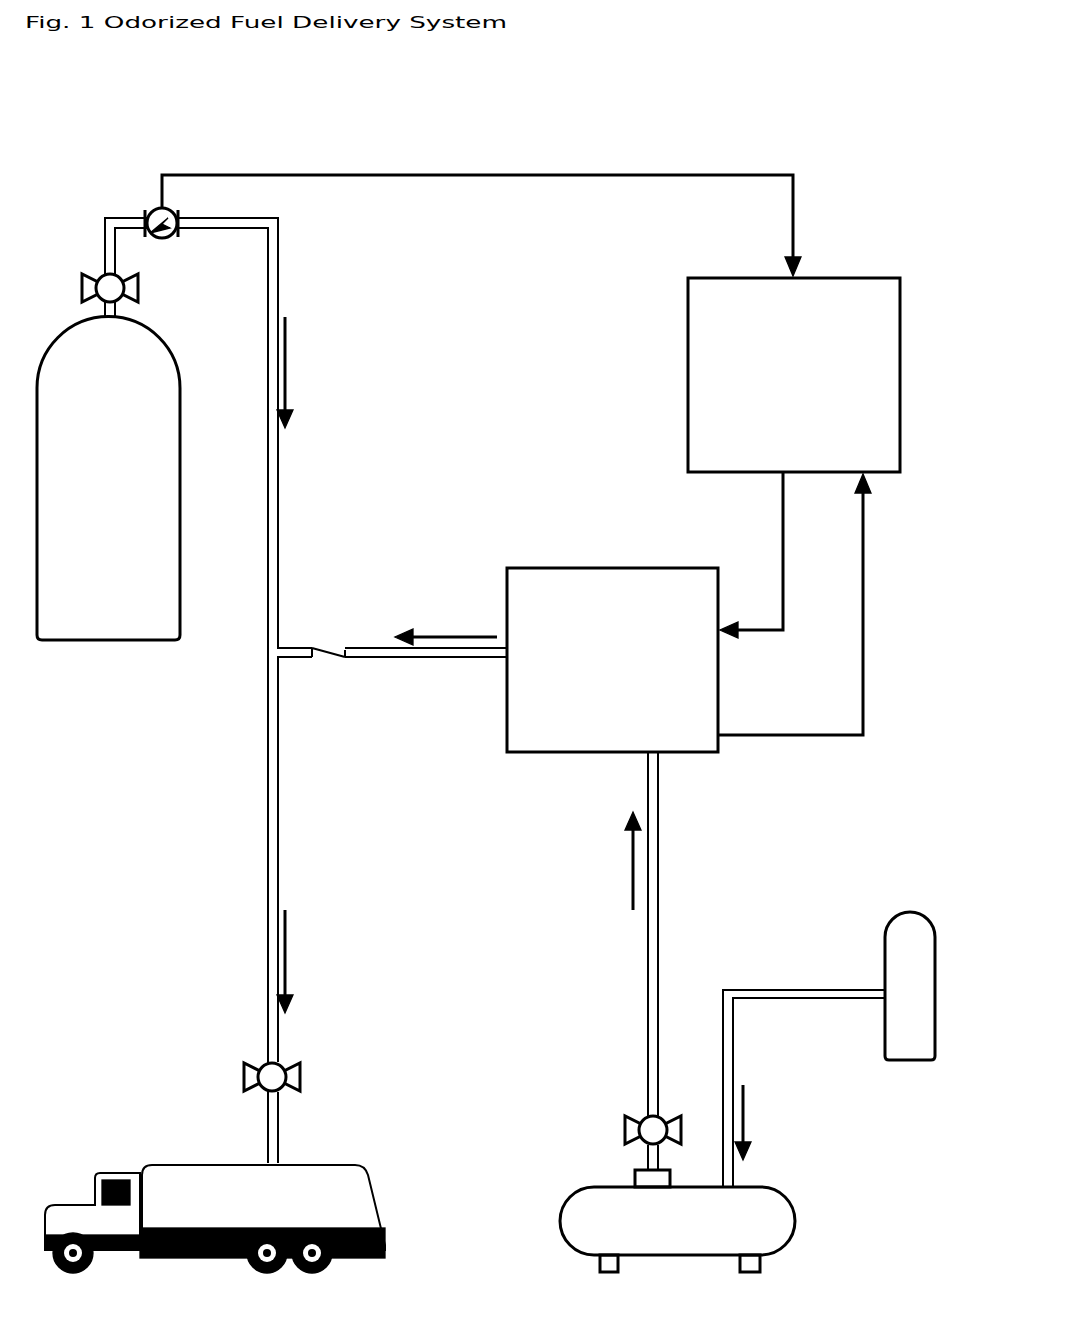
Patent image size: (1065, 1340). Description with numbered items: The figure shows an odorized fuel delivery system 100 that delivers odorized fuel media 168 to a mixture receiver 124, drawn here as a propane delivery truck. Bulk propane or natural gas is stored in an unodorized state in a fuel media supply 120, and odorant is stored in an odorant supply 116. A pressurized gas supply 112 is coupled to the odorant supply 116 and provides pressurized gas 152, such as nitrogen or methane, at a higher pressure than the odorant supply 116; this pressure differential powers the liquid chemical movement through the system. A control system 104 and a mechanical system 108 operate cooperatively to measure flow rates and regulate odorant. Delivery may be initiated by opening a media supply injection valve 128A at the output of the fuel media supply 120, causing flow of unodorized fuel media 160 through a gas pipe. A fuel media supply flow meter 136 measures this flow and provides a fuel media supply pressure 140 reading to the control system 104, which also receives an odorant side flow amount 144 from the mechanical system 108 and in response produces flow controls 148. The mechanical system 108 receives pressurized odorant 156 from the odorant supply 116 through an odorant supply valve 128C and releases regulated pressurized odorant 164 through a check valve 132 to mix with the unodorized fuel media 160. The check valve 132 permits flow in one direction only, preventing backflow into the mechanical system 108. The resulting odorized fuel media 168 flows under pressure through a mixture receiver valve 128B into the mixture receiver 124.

The odorized fuel delivery system 100 is at (876, 80).
The control system 104 is at (794, 375).
The mechanical system 108 is at (612, 660).
The pressurized gas supply 112 is at (908, 910).
The odorant supply 116 is at (677, 1221).
The fuel media supply 120 is at (108, 479).
The mixture receiver 124 is at (215, 1219).
The media supply injection valve 128A is at (82, 270).
The mixture receiver valve 128B is at (302, 1072).
The odorant supply valve 128C is at (620, 1128).
The check valve 132 is at (328, 658).
The fuel media supply flow meter 136 is at (155, 207).
The fuel media supply pressure 140 is at (481, 212).
The odorant side flow amount 144 is at (794, 604).
The flow controls 148 is at (717, 555).
The pressurized gas 152 is at (801, 1122).
The pressurized odorant 156 is at (576, 861).
The unodorized fuel media 160 is at (367, 372).
The regulated pressurized odorant 164 is at (427, 615).
The odorized fuel media 168 is at (355, 961).